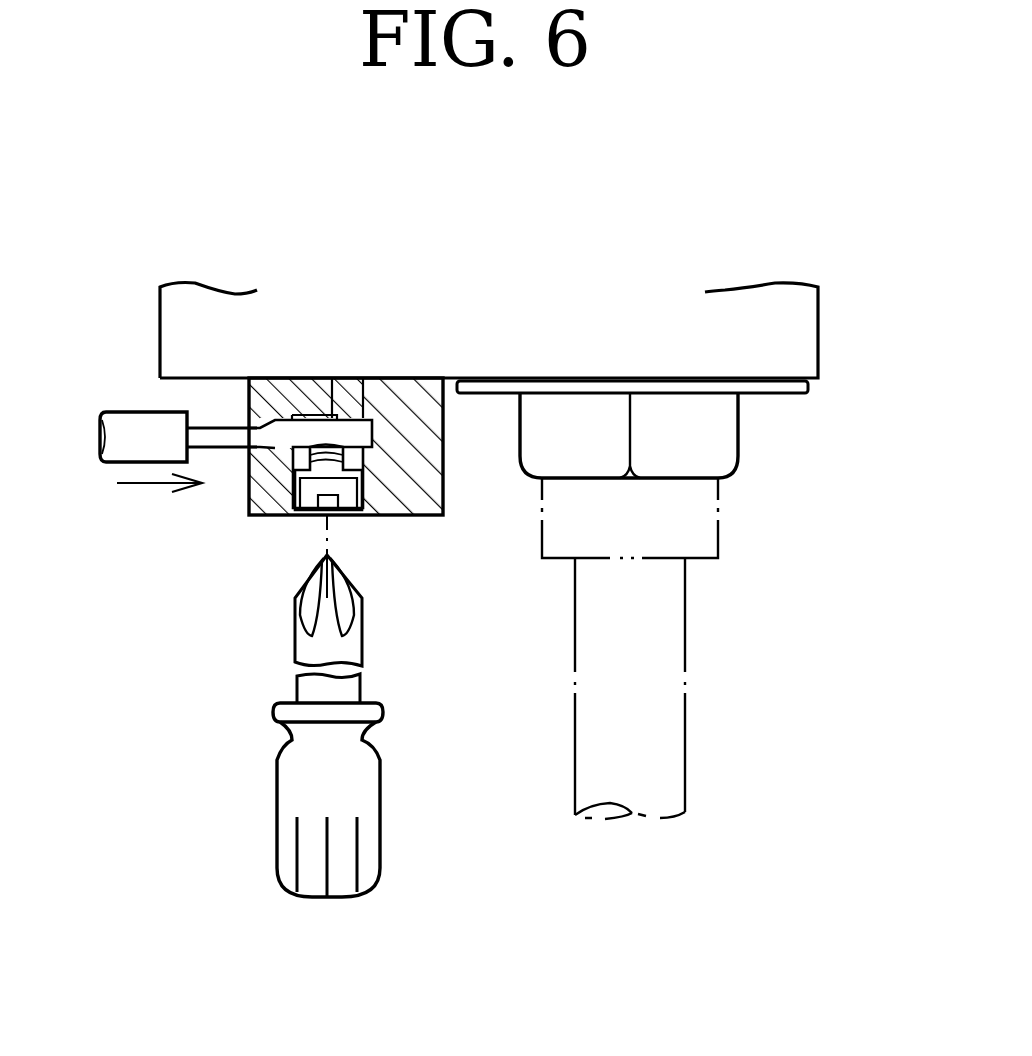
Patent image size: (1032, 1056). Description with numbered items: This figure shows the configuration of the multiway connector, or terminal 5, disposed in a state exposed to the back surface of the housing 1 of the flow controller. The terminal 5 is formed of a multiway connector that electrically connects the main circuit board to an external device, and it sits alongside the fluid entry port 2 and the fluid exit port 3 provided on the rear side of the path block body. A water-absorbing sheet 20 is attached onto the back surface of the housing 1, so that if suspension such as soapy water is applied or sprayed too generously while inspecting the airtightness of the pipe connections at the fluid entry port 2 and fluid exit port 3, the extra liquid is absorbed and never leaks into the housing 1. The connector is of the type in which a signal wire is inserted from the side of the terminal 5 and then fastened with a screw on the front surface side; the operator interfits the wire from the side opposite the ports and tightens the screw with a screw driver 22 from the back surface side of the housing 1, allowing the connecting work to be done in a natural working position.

The housing 1 is at (787, 329).
The water-absorbing sheet 20 is at (806, 386).
The fluid exit port 3 is at (748, 438).
The fluid entry port 2 is at (113, 441).
The terminal 5 is at (258, 510).
The screw driver 22 is at (298, 788).